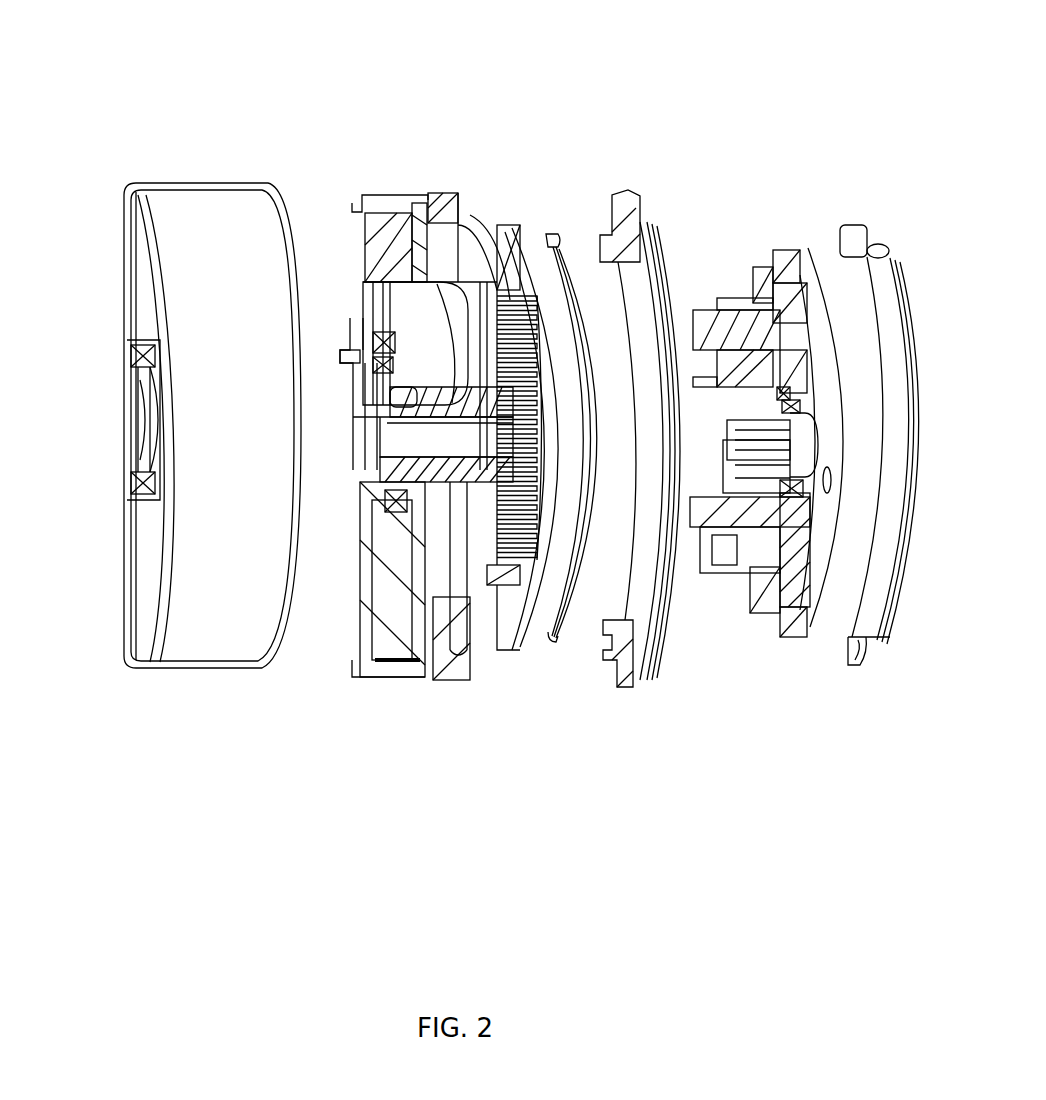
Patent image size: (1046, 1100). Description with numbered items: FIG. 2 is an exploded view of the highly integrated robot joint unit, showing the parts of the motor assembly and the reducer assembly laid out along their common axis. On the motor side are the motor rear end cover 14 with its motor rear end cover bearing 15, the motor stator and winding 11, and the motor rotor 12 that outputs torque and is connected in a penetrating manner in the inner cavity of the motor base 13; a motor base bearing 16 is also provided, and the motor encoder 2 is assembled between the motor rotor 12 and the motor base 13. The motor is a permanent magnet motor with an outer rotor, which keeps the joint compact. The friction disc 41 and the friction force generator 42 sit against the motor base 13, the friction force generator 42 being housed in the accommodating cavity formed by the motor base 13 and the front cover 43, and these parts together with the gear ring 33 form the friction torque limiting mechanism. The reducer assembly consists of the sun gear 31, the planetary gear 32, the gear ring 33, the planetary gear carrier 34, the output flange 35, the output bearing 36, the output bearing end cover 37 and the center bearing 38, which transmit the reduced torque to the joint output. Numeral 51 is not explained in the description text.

The motor encoder 2 is at (373, 480).
The motor stator and winding 11 is at (393, 250).
The motor rotor 12 is at (352, 350).
The motor base 13 is at (466, 205).
The motor rear end cover 14 is at (222, 220).
The motor rear end cover bearing 15 is at (154, 354).
The motor base bearing 16 is at (397, 390).
The sun gear 31 is at (460, 480).
The planetary gear 32 is at (738, 302).
The gear ring 33 is at (508, 613).
The planetary gear carrier 34 is at (707, 557).
The output flange 35 is at (793, 557).
The output bearing 36 is at (793, 622).
The output bearing end cover 37 is at (870, 622).
The center bearing 38 is at (797, 433).
The friction disc 41 is at (478, 252).
The friction force generator 42 is at (558, 240).
The front cover 43 is at (632, 233).
The bearing 51 is at (380, 507).